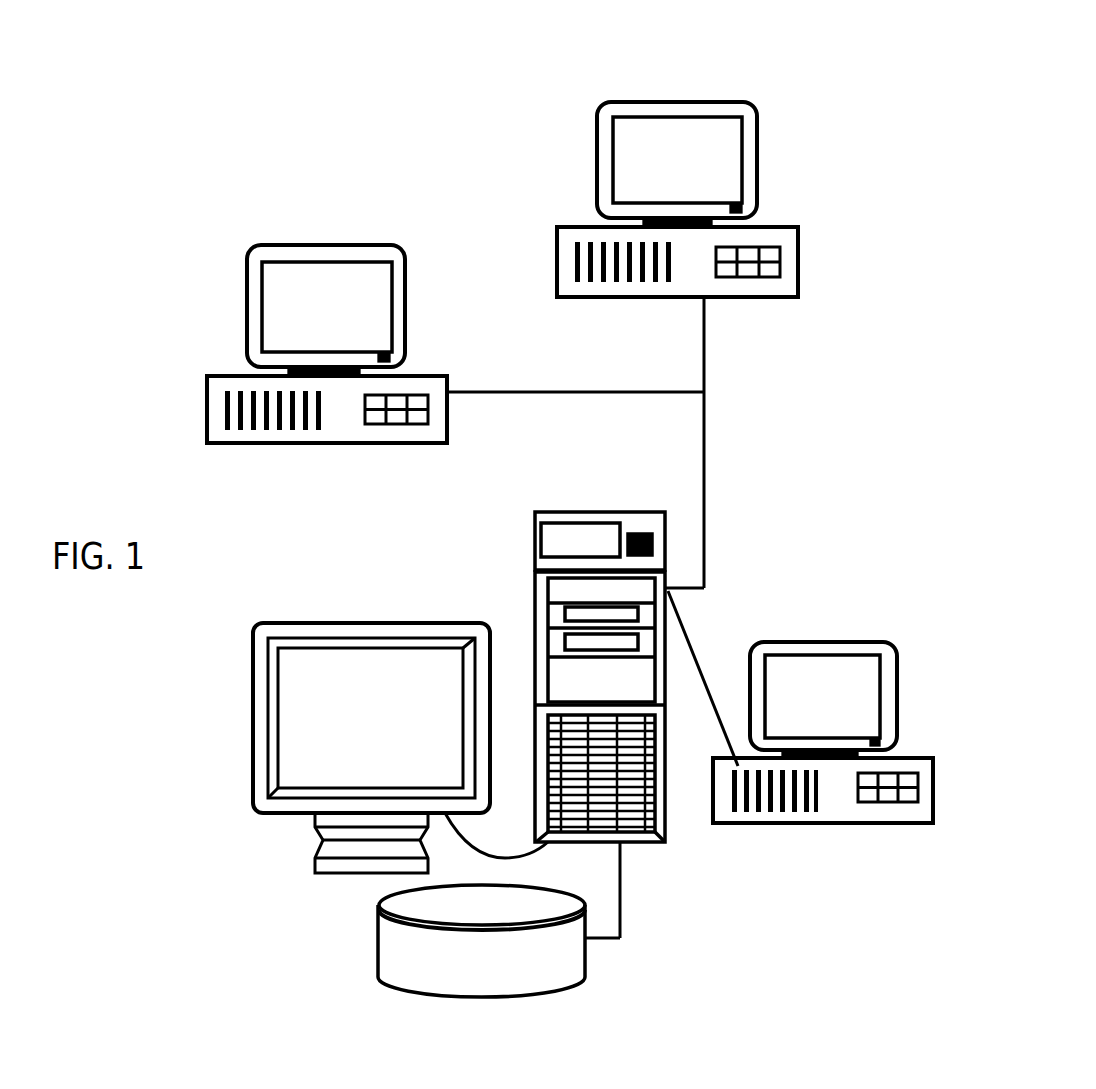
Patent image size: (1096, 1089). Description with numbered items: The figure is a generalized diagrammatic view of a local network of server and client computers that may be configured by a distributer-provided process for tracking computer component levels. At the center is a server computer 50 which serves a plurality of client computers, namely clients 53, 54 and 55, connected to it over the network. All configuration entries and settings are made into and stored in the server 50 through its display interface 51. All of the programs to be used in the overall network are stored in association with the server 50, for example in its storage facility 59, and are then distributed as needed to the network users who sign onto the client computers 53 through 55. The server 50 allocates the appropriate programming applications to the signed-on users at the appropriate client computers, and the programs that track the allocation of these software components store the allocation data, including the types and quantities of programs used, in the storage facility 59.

The server computer 50 is at (533, 535).
The display interface 51 is at (253, 812).
The client computer 53 is at (344, 260).
The client computer 54 is at (667, 107).
The client computer 55 is at (787, 808).
The storage facility 59 is at (475, 957).